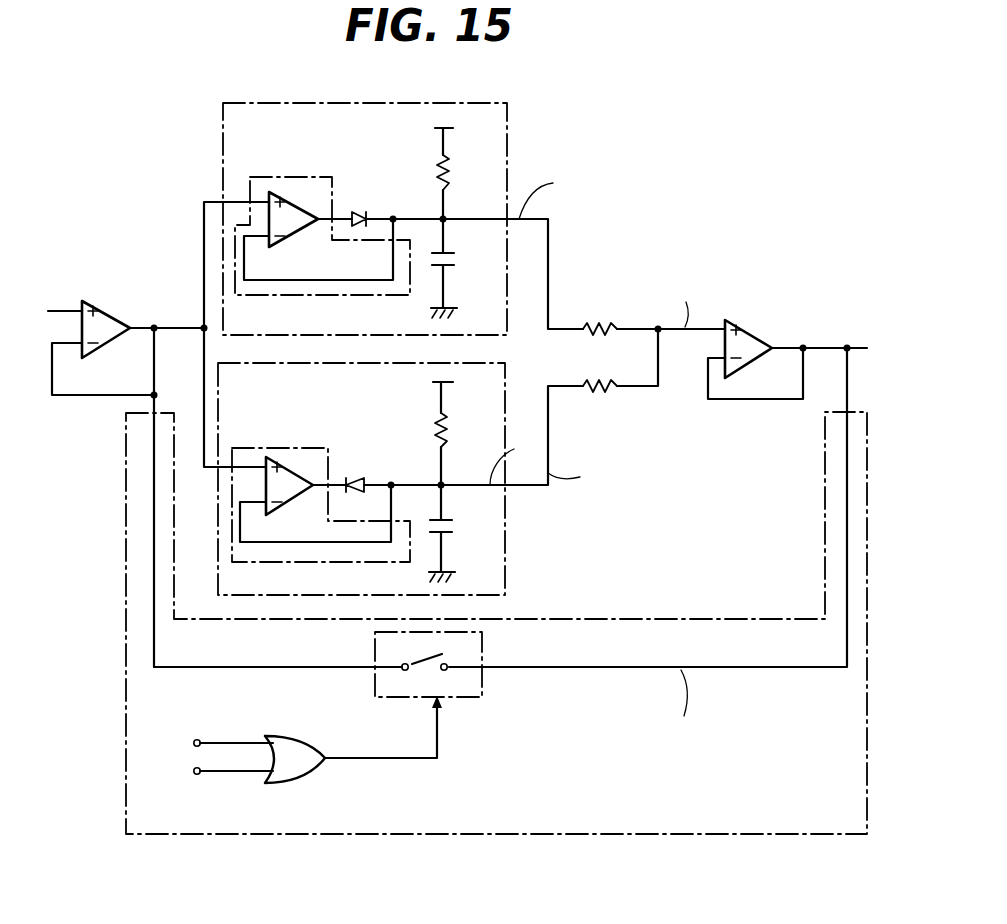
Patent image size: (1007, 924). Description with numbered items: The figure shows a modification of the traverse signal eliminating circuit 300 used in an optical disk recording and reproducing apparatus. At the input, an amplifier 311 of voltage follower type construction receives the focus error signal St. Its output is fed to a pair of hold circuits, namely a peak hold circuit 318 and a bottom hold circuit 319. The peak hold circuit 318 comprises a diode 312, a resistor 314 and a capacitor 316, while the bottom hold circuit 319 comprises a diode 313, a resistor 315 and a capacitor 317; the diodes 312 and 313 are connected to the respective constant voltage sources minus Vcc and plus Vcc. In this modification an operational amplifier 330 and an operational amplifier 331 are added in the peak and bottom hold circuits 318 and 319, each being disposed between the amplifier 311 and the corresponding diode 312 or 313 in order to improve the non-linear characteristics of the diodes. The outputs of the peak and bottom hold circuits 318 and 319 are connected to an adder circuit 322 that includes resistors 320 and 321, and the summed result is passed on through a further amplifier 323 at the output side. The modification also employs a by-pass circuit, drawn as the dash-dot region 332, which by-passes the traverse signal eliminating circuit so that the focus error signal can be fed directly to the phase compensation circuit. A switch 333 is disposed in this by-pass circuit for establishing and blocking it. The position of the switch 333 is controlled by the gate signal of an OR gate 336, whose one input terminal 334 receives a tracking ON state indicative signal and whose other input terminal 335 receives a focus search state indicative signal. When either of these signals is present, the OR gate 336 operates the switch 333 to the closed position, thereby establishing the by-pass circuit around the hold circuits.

The traverse signal eliminating circuit 300 is at (644, 231).
The amplifier 311 is at (99, 301).
The diode 312 is at (358, 211).
The diode 313 is at (360, 477).
The resistor 314 is at (467, 172).
The resistor 315 is at (466, 430).
The capacitor 316 is at (466, 264).
The capacitor 317 is at (463, 528).
The peak hold circuit 318 is at (507, 163).
The bottom hold circuit 319 is at (505, 531).
The resistor 320 is at (602, 316).
The resistor 321 is at (604, 404).
The adder circuit 322 is at (661, 388).
The buffer amplifier 323 is at (750, 322).
The operational amplifier 330 is at (298, 177).
The operational amplifier 331 is at (288, 448).
The reset circuit 332 is at (362, 836).
The switch 333 is at (484, 644).
The input terminal 334 is at (198, 740).
The input terminal 335 is at (200, 775).
The OR gate 336 is at (318, 776).